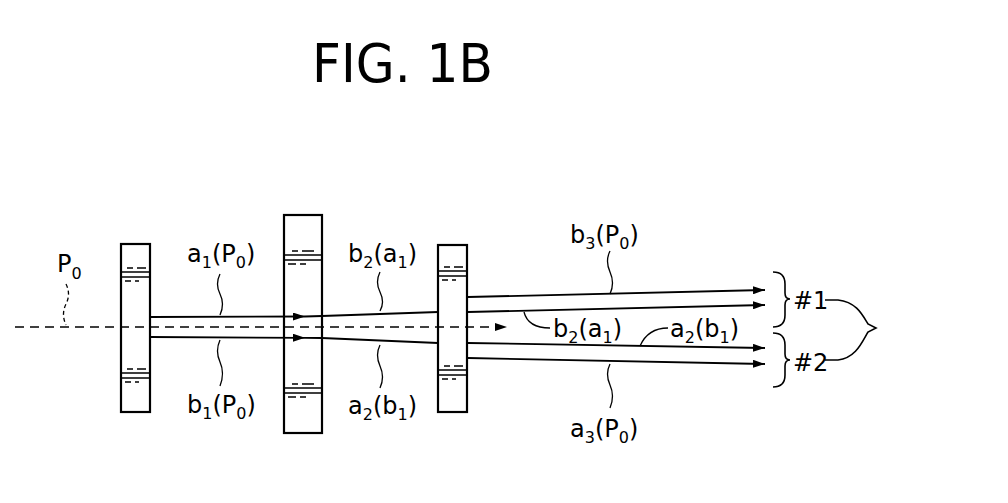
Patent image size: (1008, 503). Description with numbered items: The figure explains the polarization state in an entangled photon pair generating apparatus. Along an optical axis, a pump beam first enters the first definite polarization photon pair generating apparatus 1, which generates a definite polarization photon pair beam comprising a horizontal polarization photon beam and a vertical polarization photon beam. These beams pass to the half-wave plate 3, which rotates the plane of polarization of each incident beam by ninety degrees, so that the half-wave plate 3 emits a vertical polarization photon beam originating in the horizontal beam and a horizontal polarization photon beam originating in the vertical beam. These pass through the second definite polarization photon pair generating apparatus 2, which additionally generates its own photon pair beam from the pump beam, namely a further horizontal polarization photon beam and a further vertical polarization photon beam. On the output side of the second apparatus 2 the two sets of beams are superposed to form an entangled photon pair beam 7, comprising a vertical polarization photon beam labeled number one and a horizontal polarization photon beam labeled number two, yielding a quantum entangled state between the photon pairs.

The first definite polarization photon pair generating apparatus 1 is at (135, 244).
The second definite polarization photon pair generating apparatus 2 is at (453, 245).
The half-wave plate 3 is at (302, 215).
The entangled photon pair beam 7 is at (863, 330).